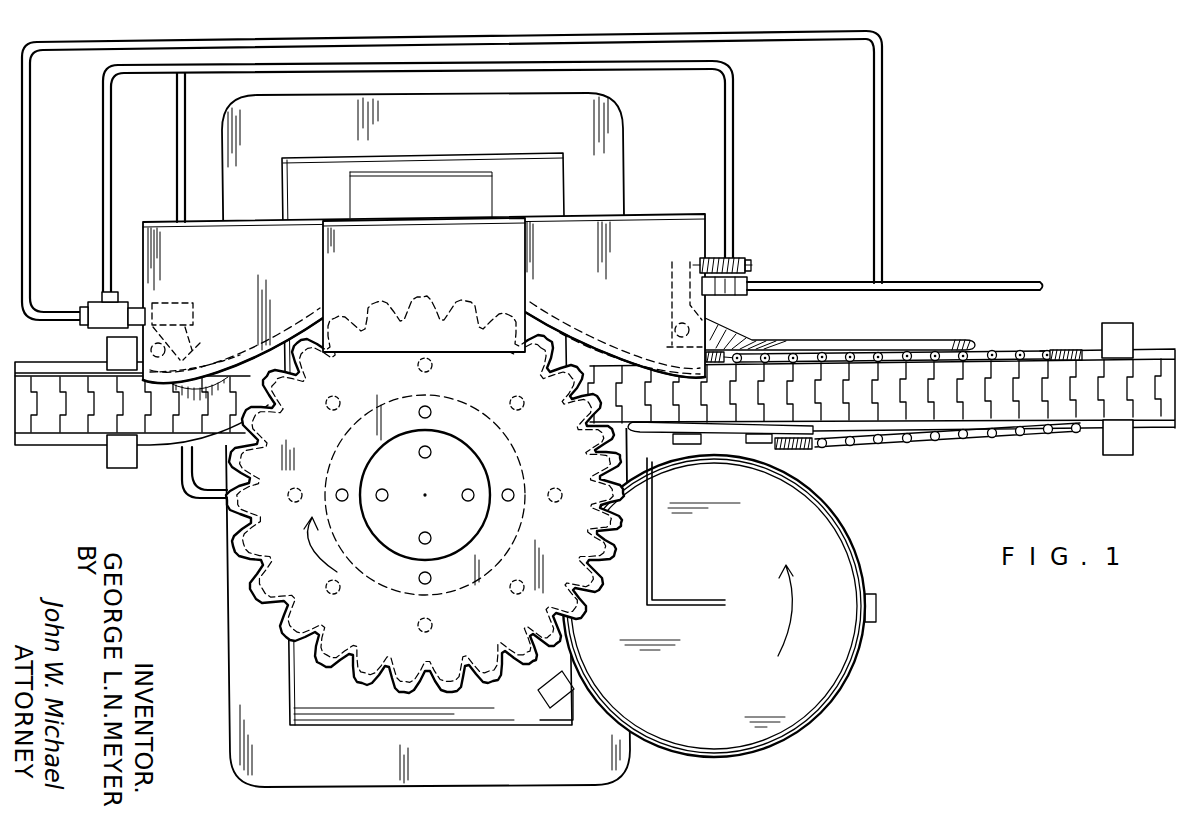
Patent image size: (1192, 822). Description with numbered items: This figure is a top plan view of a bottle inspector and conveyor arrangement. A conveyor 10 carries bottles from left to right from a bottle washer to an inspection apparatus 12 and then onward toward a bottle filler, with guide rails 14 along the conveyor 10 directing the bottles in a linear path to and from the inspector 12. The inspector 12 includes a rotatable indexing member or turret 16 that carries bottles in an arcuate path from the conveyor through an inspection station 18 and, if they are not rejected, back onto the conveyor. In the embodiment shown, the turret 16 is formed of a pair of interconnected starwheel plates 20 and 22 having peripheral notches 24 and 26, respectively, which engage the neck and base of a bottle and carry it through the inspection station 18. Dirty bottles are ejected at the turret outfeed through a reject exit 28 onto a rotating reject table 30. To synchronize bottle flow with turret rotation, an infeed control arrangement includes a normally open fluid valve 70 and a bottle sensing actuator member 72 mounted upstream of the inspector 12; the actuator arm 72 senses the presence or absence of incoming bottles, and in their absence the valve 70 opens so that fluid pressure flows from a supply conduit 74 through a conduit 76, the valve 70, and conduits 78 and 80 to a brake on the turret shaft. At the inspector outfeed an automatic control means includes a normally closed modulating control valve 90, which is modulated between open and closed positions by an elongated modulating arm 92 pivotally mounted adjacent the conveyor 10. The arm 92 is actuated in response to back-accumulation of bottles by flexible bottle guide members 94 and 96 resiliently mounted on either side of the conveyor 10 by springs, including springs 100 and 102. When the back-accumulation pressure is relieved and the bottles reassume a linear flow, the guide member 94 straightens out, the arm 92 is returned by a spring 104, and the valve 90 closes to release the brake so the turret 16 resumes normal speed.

The conveyor 10 is at (45, 425).
The inspection apparatus 12 is at (337, 250).
The guide rails 14 is at (27, 372).
The turret 16 is at (248, 598).
The inspection station 18 is at (423, 300).
The starwheel plate 20 is at (290, 620).
The starwheel plate 22 is at (297, 657).
The peripheral notches 24 is at (352, 668).
The peripheral notches 26 is at (260, 550).
The reject exit 28 is at (625, 452).
The reject table 30 is at (745, 688).
The fluid valve 70 is at (97, 310).
The bottle sensing actuator member 72 is at (200, 343).
The supply conduit 74 is at (973, 282).
The conduit 76 is at (30, 100).
The conduit 78 is at (103, 163).
The conduit 80 is at (177, 137).
The modulating control valve 90 is at (727, 296).
The modulating arm 92 is at (892, 352).
The flexible bottle guide member 94 is at (832, 355).
The flexible bottle guide member 96 is at (933, 447).
The spring 100 is at (1065, 350).
The spring 102 is at (797, 450).
The spring 104 is at (722, 264).